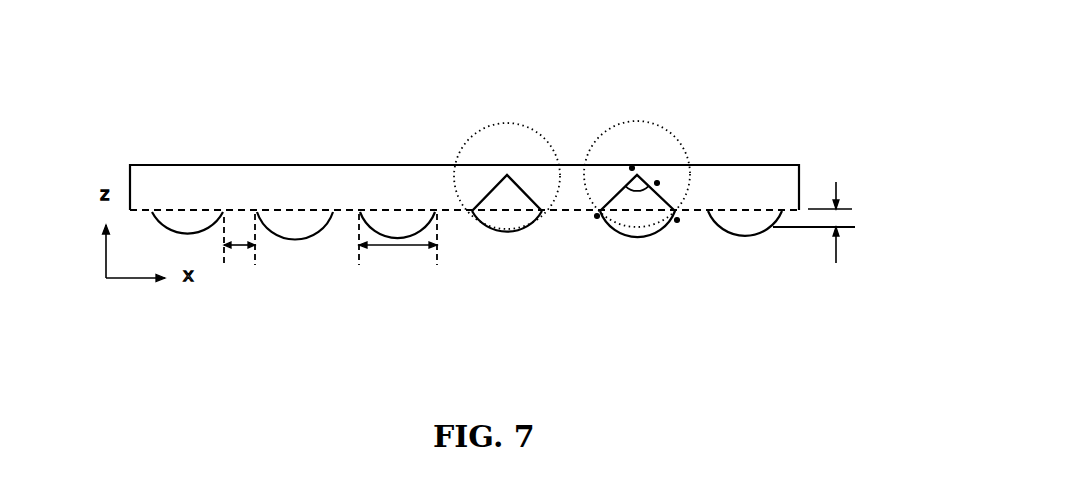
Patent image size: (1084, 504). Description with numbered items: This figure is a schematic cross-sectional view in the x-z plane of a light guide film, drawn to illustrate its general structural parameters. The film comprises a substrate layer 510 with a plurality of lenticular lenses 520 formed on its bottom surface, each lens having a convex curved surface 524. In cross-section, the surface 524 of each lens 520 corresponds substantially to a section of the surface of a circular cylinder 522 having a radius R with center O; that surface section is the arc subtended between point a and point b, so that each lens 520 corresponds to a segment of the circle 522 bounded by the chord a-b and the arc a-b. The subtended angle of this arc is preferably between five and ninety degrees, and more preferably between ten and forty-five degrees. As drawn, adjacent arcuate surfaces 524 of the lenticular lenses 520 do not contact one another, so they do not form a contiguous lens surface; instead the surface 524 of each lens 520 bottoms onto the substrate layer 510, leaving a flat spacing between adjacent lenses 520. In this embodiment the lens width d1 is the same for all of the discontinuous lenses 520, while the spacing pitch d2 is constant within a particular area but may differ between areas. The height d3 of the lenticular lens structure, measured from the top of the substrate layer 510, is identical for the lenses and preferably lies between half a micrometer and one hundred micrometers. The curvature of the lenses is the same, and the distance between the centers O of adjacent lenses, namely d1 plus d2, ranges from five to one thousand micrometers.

The substrate layer 510 is at (798, 190).
The lenticular lenses 520 is at (305, 215).
The circular cylinder 522 is at (672, 147).
The convex curved surface 524 is at (615, 228).
The point a is at (596, 217).
The point b is at (678, 220).
The center O is at (631, 167).
The radius R is at (657, 183).
The lens width d1 is at (237, 250).
The spacing pitch d2 is at (393, 250).
The height of the lenticular lens structure d3 is at (814, 245).